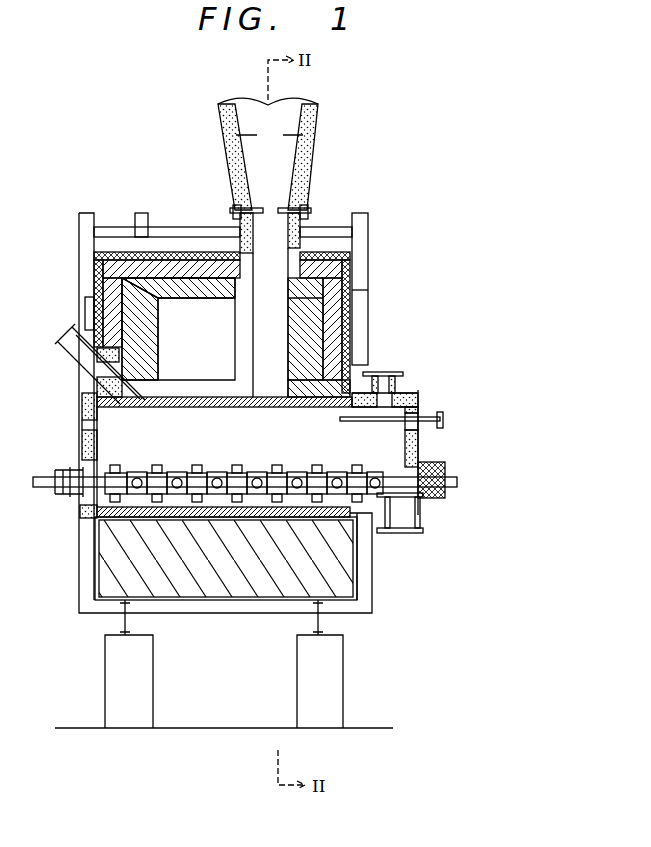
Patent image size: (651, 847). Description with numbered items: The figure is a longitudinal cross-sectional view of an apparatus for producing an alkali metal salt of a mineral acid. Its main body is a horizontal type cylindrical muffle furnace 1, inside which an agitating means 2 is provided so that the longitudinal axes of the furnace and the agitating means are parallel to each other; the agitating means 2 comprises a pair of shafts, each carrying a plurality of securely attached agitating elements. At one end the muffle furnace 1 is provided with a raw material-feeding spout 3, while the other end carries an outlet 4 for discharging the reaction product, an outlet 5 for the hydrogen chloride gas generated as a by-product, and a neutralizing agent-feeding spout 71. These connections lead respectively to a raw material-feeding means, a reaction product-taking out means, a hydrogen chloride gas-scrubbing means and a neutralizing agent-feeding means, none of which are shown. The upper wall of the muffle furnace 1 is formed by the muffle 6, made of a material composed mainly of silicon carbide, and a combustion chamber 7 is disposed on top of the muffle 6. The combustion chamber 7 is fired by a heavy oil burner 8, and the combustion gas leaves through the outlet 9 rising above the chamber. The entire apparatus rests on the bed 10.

The horizontal type cylindrical muffle furnace 1 is at (393, 448).
The agitating means 2 is at (217, 470).
The raw material-feeding spout 3 is at (75, 358).
The reaction product outlet 4 is at (408, 520).
The hydrogen chloride gas outlet 5 is at (385, 372).
The muffle 6 is at (190, 408).
The combustion chamber 7 is at (180, 347).
The heavy oil burner 8 is at (86, 312).
The combustion gas outlet 9 is at (287, 154).
The bed 10 is at (335, 675).
The neutralizing agent-feeding spout 71 is at (443, 410).